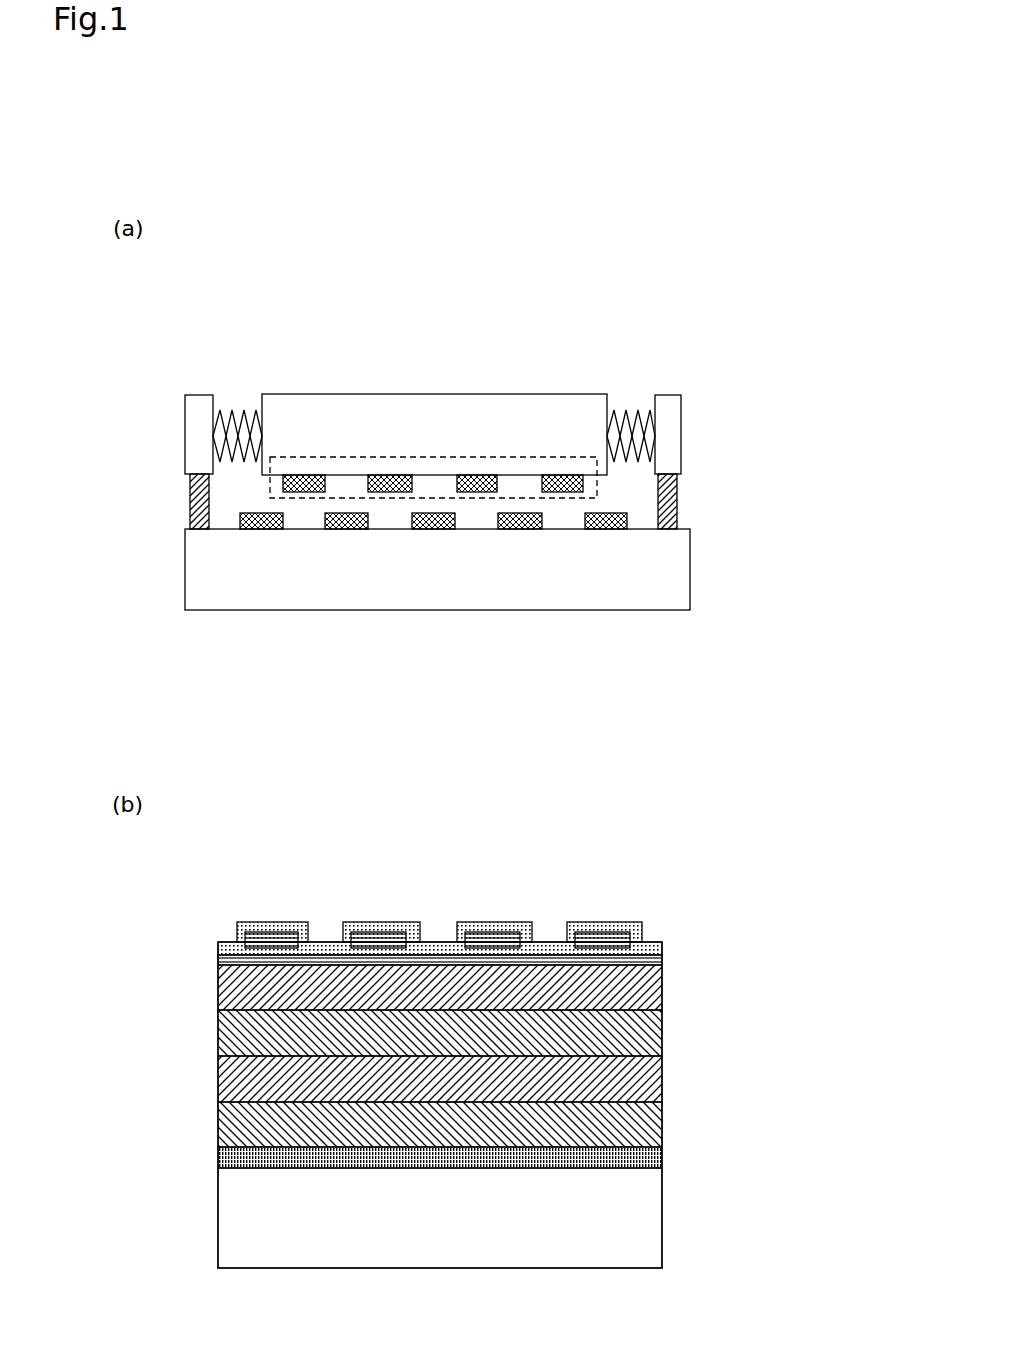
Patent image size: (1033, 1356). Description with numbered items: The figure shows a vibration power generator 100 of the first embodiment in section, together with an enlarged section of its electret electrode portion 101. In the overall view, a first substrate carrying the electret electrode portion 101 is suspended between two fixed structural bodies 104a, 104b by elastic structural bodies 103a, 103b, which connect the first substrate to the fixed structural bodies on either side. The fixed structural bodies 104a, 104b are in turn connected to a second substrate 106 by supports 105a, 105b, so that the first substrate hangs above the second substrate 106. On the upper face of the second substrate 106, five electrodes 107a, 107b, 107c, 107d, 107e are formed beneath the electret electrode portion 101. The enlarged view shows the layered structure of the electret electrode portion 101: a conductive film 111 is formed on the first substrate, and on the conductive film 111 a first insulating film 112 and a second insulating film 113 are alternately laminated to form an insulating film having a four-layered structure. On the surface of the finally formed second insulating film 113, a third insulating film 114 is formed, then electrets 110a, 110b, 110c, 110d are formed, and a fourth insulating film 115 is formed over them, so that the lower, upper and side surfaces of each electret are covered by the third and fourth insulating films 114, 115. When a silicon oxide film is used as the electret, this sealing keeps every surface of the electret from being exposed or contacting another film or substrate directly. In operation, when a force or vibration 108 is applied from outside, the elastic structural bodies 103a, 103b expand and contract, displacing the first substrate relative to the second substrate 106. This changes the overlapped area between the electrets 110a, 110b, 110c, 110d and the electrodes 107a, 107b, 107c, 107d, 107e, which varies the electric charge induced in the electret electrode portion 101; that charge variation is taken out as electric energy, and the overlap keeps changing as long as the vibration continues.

The vibration power generator 100 is at (647, 220).
The electret electrode portion 101 is at (518, 458).
The elastic structural body 103a is at (238, 400).
The elastic structural body 103b is at (630, 410).
The fixed structural body 104a is at (192, 403).
The fixed structural body 104b is at (670, 425).
The support 105a is at (200, 503).
The support 105b is at (678, 502).
The second substrate 106 is at (663, 593).
The electrode 107a is at (256, 532).
The electrode 107b is at (343, 532).
The electrode 107c is at (426, 532).
The electrode 107d is at (518, 532).
The electrode 107e is at (606, 532).
The force or vibration 108 is at (520, 367).
The electret 110a is at (271, 934).
The electret 110b is at (378, 934).
The electret 110c is at (492, 934).
The electret 110d is at (600, 934).
The conductive film 111 is at (662, 1157).
The first insulating film 112 is at (660, 1103).
The second insulating film 113 is at (663, 1053).
The third insulating film 114 is at (665, 960).
The fourth insulating film 115 is at (640, 922).